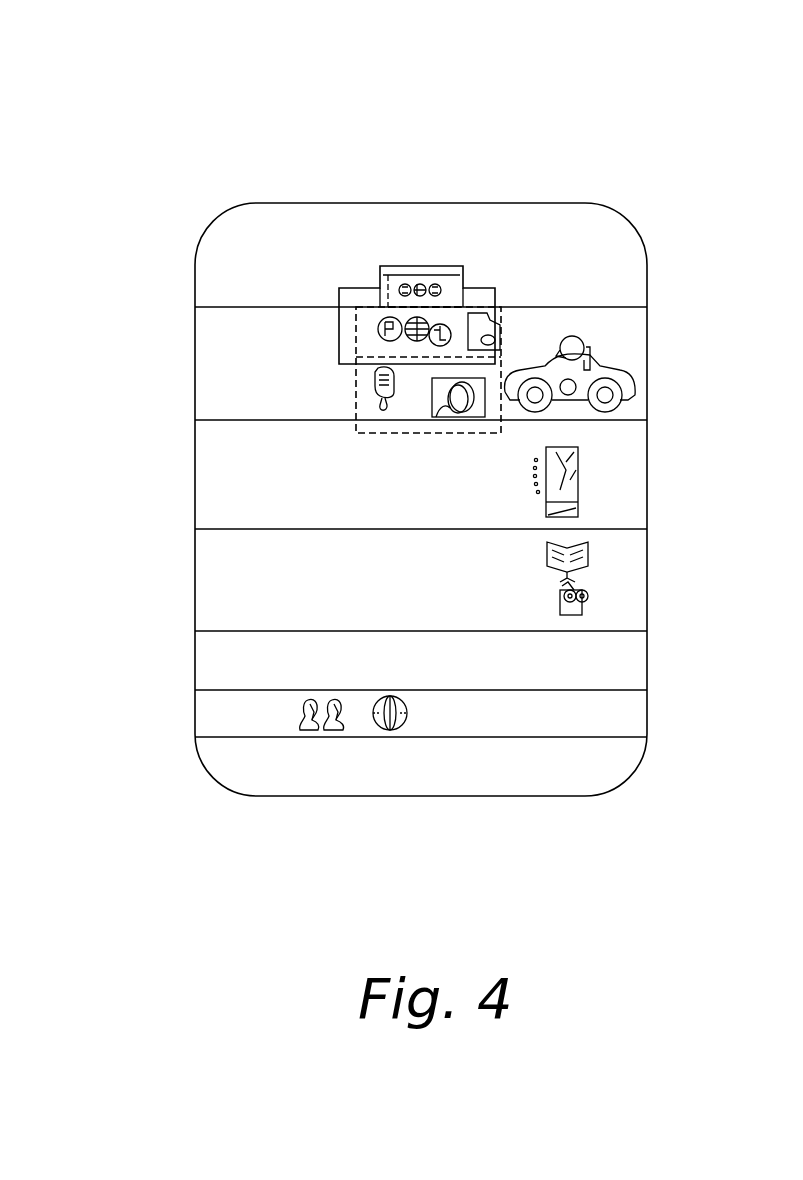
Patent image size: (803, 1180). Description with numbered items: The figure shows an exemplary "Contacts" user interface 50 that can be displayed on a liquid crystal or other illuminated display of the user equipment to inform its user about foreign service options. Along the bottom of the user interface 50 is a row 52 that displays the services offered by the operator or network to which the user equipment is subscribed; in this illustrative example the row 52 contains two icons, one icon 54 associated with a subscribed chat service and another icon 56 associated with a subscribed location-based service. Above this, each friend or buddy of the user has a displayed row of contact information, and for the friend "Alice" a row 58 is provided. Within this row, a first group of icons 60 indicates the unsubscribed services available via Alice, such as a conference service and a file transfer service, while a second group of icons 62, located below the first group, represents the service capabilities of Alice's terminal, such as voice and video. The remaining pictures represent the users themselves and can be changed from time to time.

The user interface 50 is at (176, 145).
The row 52 is at (253, 718).
The icon 54 is at (325, 731).
The icon 56 is at (403, 720).
The row 58 is at (195, 344).
The first group of icons 60 is at (535, 307).
The second group of icons 62 is at (393, 433).